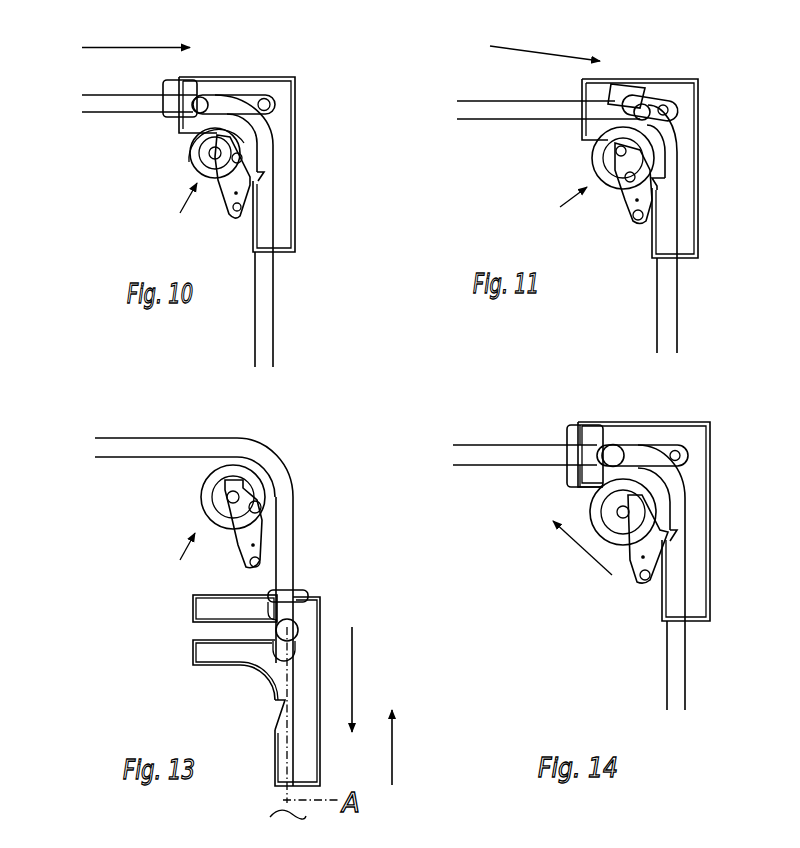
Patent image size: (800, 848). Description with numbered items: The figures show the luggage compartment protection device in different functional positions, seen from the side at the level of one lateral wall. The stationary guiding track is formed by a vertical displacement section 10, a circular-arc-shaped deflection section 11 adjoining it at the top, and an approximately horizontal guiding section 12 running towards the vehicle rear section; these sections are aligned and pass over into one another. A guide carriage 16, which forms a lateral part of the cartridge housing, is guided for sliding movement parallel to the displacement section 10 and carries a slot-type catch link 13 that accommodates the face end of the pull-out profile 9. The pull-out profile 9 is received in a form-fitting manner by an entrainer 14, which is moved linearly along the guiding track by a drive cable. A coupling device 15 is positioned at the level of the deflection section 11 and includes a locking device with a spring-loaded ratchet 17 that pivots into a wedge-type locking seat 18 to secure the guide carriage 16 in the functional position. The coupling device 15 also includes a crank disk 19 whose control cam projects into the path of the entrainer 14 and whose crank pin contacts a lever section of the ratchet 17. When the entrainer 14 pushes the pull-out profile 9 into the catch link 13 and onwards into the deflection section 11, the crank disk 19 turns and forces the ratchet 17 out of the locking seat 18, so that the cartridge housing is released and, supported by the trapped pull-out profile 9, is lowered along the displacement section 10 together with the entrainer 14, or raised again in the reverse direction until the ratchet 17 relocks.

In FIG. 10, the pull-out profile 9 is at (197, 111).
In FIG. 11, the pull-out profile 9 is at (642, 112).
In FIG. 13, the pull-out profile 9 is at (290, 630).
In FIG. 14, the pull-out profile 9 is at (611, 452).
In FIG. 10, the displacement section 10 is at (244, 231).
In FIG. 11, the displacement section 10 is at (660, 310).
In FIG. 13, the displacement section 10 is at (289, 575).
In FIG. 14, the displacement section 10 is at (680, 667).
In FIG. 13, the deflection section 11 is at (272, 460).
In FIG. 10, the guiding section 12 is at (139, 103).
In FIG. 11, the guiding section 12 is at (485, 110).
In FIG. 13, the guiding section 12 is at (140, 447).
In FIG. 14, the guiding section 12 is at (475, 455).
In FIG. 10, the catch link 13 is at (274, 105).
In FIG. 11, the catch link 13 is at (674, 110).
In FIG. 13, the catch link 13 is at (215, 623).
In FIG. 14, the catch link 13 is at (686, 450).
In FIG. 10, the entrainer 14 is at (172, 108).
In FIG. 11, the entrainer 14 is at (613, 107).
In FIG. 13, the entrainer 14 is at (298, 600).
In FIG. 14, the entrainer 14 is at (568, 434).
In FIG. 10, the coupling device 15 is at (182, 215).
In FIG. 11, the coupling device 15 is at (560, 210).
In FIG. 13, the coupling device 15 is at (176, 562).
In FIG. 14, the coupling device 15 is at (582, 548).
In FIG. 10, the guide carriage 16 is at (287, 147).
In FIG. 11, the guide carriage 16 is at (692, 238).
In FIG. 13, the guide carriage 16 is at (310, 640).
In FIG. 14, the guide carriage 16 is at (700, 598).
In FIG. 10, the ratchet 17 is at (223, 190).
In FIG. 11, the ratchet 17 is at (643, 182).
In FIG. 13, the ratchet 17 is at (245, 532).
In FIG. 14, the ratchet 17 is at (635, 550).
In FIG. 10, the locking seat 18 is at (258, 177).
In FIG. 11, the locking seat 18 is at (661, 187).
In FIG. 13, the locking seat 18 is at (274, 702).
In FIG. 14, the locking seat 18 is at (673, 535).
In FIG. 10, the crank disk 19 is at (195, 167).
In FIG. 11, the crank disk 19 is at (591, 160).
In FIG. 13, the crank disk 19 is at (203, 498).
In FIG. 14, the crank disk 19 is at (590, 512).